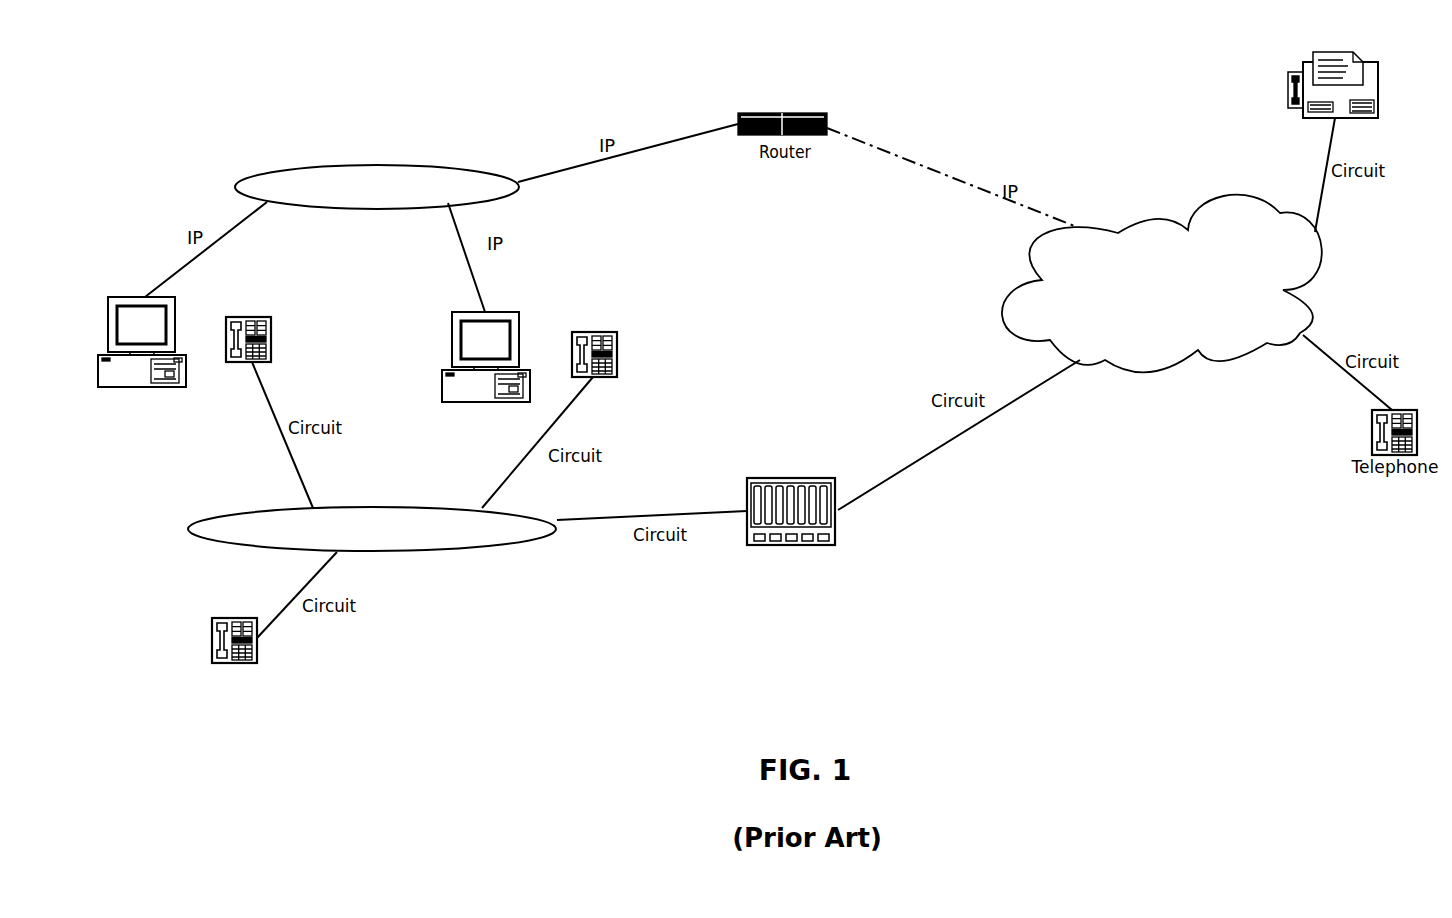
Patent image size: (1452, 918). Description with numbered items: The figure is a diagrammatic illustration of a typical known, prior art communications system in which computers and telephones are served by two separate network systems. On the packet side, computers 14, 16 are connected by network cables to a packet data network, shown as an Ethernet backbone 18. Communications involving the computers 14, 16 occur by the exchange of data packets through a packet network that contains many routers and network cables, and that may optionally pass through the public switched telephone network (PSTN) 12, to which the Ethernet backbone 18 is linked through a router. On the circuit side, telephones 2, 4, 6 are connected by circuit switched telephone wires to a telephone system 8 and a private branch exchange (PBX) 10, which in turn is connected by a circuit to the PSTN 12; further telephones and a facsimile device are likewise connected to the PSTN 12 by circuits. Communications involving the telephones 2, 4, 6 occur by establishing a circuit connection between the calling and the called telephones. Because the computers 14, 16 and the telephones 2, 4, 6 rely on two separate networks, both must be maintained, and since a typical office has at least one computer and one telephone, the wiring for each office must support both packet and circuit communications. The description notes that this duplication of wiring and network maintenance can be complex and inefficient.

The telephone 2 is at (244, 315).
The telephone 4 is at (603, 341).
The telephone 6 is at (235, 663).
The telephone system 8 is at (372, 529).
The private branch exchange (PBX) 10 is at (814, 525).
The public switched telephone network (PSTN) 12 is at (1162, 284).
The computer 14 is at (142, 359).
The computer 16 is at (486, 342).
The Ethernet backbone 18 is at (377, 187).